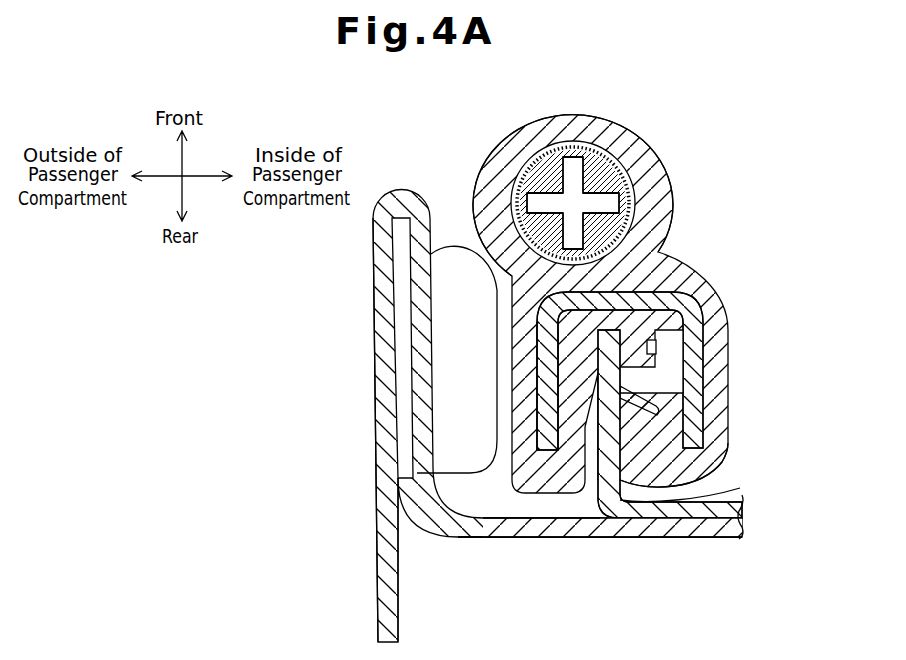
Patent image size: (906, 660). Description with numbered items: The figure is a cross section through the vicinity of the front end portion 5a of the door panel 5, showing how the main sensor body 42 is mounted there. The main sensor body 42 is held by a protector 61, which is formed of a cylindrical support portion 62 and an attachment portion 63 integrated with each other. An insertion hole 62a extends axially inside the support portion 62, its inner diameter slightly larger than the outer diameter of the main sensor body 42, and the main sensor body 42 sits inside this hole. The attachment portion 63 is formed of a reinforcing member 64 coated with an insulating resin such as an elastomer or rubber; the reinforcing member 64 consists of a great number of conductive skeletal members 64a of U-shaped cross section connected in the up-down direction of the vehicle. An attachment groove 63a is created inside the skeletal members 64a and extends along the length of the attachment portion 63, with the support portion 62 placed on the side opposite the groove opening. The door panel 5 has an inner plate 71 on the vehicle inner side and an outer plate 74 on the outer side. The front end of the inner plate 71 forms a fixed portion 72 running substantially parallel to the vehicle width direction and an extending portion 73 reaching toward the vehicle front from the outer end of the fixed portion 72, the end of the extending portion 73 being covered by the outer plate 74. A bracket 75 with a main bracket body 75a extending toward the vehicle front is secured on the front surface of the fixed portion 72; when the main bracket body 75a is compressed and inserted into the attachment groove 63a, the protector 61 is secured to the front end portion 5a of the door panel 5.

The door panel 5 is at (384, 520).
The front end portion of the door panel 5a is at (540, 526).
The main sensor body 42 is at (636, 216).
The protector 61 is at (729, 404).
The support portion 62 is at (657, 181).
The insertion hole 62a is at (604, 148).
The attachment portion 63 is at (722, 450).
The attachment groove 63a is at (647, 348).
The reinforcing member 64 is at (706, 366).
The skeletal members 64a is at (547, 383).
The inner plate 71 is at (525, 537).
The fixed portion 72 is at (614, 537).
The extending portion 73 is at (392, 380).
The outer plate 74 is at (384, 600).
The bracket 75 is at (712, 513).
The main bracket body 75a is at (688, 491).